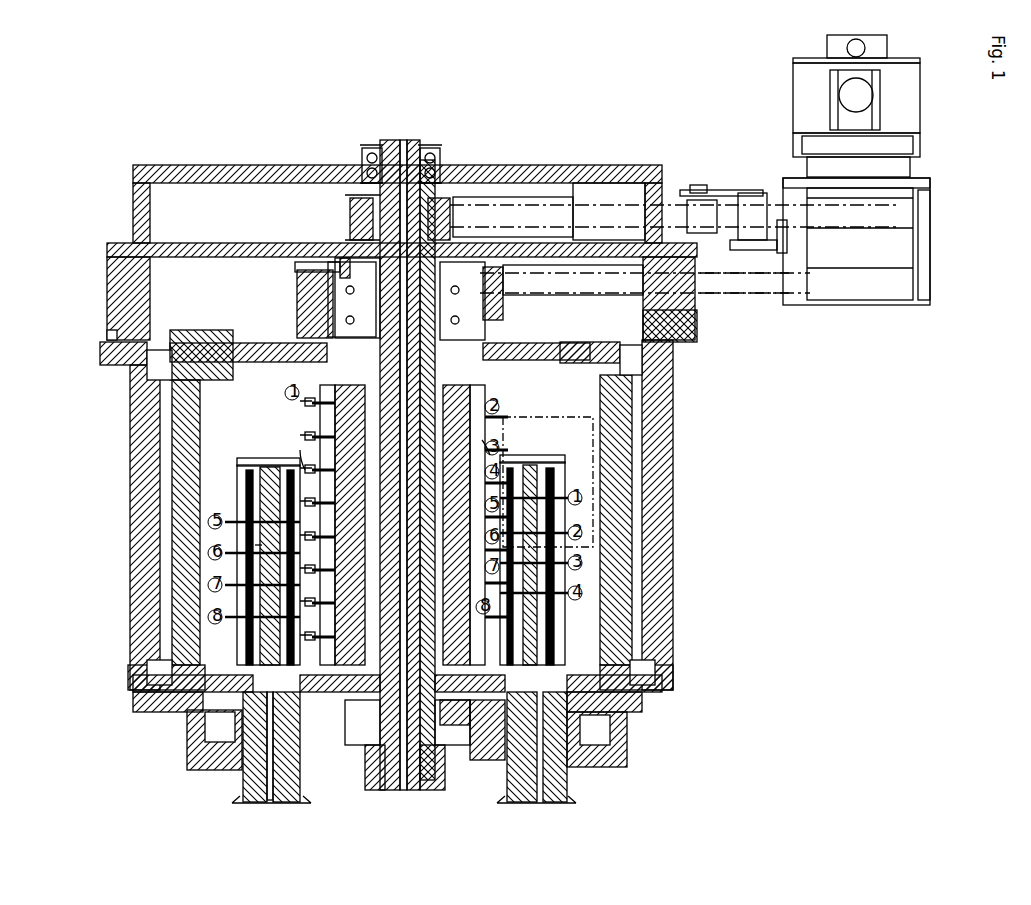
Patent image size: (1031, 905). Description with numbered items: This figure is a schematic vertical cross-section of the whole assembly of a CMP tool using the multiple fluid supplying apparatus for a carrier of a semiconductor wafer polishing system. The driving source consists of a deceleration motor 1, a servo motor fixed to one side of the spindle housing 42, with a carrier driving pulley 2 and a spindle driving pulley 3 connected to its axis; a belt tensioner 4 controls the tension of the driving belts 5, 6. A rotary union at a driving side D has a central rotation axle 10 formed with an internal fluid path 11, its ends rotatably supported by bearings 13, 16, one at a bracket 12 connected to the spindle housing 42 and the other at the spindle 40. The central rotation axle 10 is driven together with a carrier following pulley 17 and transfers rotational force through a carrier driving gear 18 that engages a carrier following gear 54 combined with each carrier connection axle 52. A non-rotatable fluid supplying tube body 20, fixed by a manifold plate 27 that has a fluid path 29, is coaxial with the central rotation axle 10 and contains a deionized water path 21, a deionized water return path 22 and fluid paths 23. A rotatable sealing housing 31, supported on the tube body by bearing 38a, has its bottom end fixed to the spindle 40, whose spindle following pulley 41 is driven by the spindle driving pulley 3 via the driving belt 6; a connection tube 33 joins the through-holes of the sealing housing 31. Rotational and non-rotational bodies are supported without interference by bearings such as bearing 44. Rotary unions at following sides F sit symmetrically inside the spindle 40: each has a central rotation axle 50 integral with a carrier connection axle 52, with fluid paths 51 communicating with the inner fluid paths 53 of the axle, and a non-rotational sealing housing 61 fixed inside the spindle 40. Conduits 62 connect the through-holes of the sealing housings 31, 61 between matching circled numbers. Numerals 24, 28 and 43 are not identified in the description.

The deceleration motor 1 is at (808, 94).
The carrier driving pulley 2 is at (855, 225).
The spindle driving pulley 3 is at (885, 285).
The belt tensioner 4 is at (705, 215).
The driving belt 5 is at (722, 235).
The driving belt 6 is at (768, 295).
The central rotation axle 10 is at (427, 160).
The fluid path 11 is at (404, 150).
The bracket 12 is at (538, 165).
The bearing 13 is at (368, 148).
The bearing 16 is at (380, 757).
The carrier following pulley 17 is at (350, 212).
The carrier driving gear 18 is at (432, 760).
The fluid supplying tube body 20 is at (340, 258).
The deionized water path 21 is at (295, 272).
The deionized water return path 22 is at (320, 420).
The fluid paths 23 is at (475, 318).
The right feeder column 24 is at (470, 405).
The manifold plate 27 is at (175, 248).
The partition plate 28 is at (205, 247).
The fluid path 29 is at (578, 197).
The sealing housing 31 is at (475, 444).
The connection tube 33 is at (310, 452).
The bearing 38a is at (510, 285).
The spindle 40 is at (625, 484).
The spindle following pulley 41 is at (297, 298).
The spindle housing 42 is at (673, 517).
The bottom frame 43 is at (627, 737).
The bearing 44 is at (147, 365).
The central rotation axle 50 is at (262, 468).
The fluid paths 51 is at (250, 545).
The carrier connection axle 52 is at (290, 803).
The inner fluid paths 53 is at (268, 800).
The carrier following gear 54 is at (190, 748).
The sealing housing 61 is at (240, 474).
The conduits 62 is at (530, 417).
The driving side D is at (305, 385).
The following side F is at (215, 475).